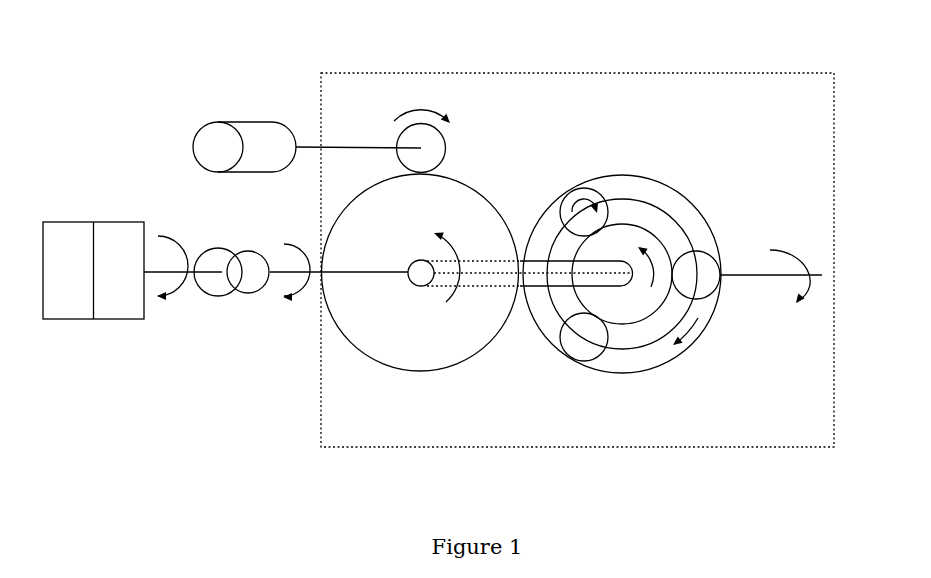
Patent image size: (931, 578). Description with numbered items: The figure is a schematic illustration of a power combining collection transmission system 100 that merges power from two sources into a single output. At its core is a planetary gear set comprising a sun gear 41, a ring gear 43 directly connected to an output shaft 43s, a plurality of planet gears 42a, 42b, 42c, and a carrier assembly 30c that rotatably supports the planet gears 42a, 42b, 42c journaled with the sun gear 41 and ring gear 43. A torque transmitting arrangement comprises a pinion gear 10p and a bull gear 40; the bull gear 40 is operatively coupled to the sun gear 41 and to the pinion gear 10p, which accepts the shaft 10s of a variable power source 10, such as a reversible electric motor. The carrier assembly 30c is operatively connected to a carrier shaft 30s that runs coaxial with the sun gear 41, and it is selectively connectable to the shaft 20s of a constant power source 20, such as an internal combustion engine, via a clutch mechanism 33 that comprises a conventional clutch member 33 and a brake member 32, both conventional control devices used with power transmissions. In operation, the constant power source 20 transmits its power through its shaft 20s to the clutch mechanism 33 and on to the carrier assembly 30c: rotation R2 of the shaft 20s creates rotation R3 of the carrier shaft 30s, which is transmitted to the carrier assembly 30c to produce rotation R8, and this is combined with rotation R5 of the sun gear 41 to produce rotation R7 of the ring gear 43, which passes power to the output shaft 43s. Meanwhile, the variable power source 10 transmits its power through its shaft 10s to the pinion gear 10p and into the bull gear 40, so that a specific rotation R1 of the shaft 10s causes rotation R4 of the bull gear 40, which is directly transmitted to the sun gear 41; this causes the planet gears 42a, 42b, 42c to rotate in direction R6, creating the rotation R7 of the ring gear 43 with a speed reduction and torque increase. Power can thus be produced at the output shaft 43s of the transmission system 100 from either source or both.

The variable power source 10 is at (257, 122).
The shaft of variable power source 10s is at (357, 147).
The pinion gear 10p is at (458, 161).
The constant power source 20 is at (118, 332).
The shaft of constant power source 20s is at (167, 274).
The carrier shaft 30s is at (320, 277).
The carrier assembly 30c is at (668, 192).
The brake member 32 is at (257, 298).
The clutch mechanism 33 is at (208, 297).
The bull gear 40 is at (470, 362).
The sun gear 41 is at (625, 340).
The planet gear 42a is at (577, 186).
The planet gear 42b is at (706, 253).
The planet gear 42c is at (583, 353).
The ring gear 43 is at (722, 322).
The output shaft 43s is at (747, 281).
The power combining collection transmission system 100 is at (607, 458).
The rotation of variable power supply shaft R1 is at (422, 99).
The rotation of constant power supply shaft R2 is at (172, 258).
The rotation of carrier shaft R3 is at (295, 259).
The rotation of bull gear R4 is at (447, 255).
The rotation of sun gear R5 is at (628, 256).
The rotation direction of planet gears R6 is at (570, 190).
The rotation of ring gear R7 is at (792, 261).
The rotation of carrier R8 is at (697, 343).